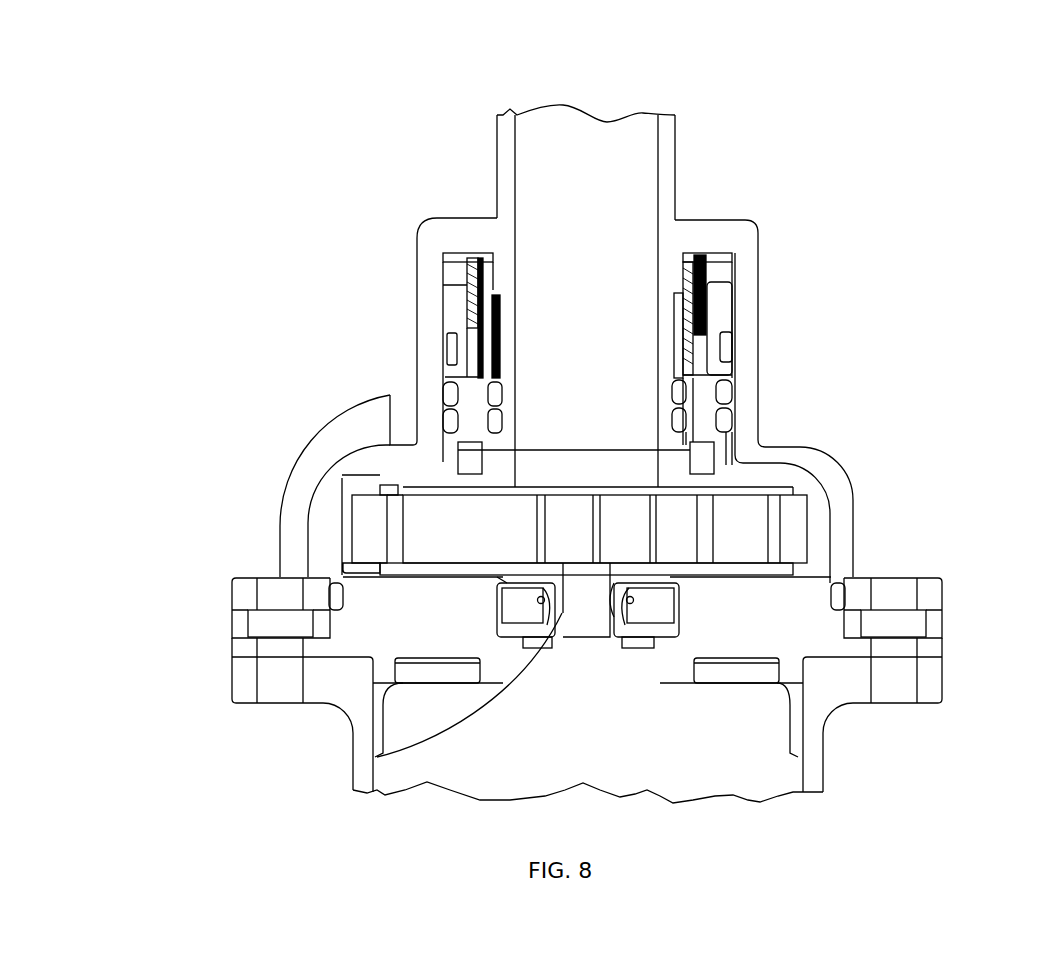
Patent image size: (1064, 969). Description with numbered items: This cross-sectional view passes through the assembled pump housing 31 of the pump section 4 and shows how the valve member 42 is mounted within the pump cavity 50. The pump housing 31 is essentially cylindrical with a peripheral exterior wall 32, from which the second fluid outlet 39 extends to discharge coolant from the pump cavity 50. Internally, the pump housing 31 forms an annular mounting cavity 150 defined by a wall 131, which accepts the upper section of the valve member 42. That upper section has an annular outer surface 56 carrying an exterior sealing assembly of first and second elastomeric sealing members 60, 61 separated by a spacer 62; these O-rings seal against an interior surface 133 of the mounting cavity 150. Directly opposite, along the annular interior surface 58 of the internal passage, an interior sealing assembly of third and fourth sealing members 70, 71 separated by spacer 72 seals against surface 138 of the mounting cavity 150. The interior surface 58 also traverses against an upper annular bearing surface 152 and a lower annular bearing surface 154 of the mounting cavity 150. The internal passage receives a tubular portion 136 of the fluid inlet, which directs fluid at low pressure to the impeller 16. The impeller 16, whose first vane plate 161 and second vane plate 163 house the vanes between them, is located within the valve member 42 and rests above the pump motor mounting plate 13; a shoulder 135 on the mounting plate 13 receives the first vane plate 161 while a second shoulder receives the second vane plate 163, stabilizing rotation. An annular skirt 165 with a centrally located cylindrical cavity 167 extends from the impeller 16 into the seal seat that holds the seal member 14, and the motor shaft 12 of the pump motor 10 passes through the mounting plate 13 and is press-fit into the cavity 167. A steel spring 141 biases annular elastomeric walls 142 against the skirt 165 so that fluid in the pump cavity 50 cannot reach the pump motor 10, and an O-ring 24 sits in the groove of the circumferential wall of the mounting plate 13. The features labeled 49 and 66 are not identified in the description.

The pump section 4 is at (753, 50).
The pump motor 10 is at (703, 762).
The motor shaft 12 is at (530, 613).
The pump motor mounting plate 13 is at (375, 608).
The seal member 14 is at (377, 758).
The impeller 16 is at (445, 530).
The O-ring 24 is at (333, 602).
The pump housing 31 is at (716, 212).
The peripheral exterior wall 32 is at (417, 263).
The second fluid outlet 39 is at (382, 494).
The valve member 42 is at (812, 517).
The outer wall 49 is at (832, 532).
The pump cavity 50 is at (735, 568).
The annular outer surface 56 is at (733, 440).
The annular interior surface 58 is at (625, 350).
The first elastomeric sealing member 60 is at (722, 393).
The second elastomeric sealing member 61 is at (724, 422).
The spacer 62 is at (452, 398).
The spacer 66 is at (707, 360).
The third sealing member 70 is at (680, 385).
The fourth sealing member 71 is at (670, 428).
The spacer 72 is at (478, 373).
The wall 131 is at (747, 330).
The interior surface 133 is at (730, 347).
The shoulder 135 is at (340, 584).
The tubular portion 136 is at (563, 177).
The surface 138 is at (500, 403).
The steel spring 141 is at (633, 602).
The annular elastomeric walls 142 is at (379, 487).
The annular mounting cavity 150 is at (450, 270).
The upper annular bearing surface 152 is at (490, 275).
The lower annular bearing surface 154 is at (668, 437).
The first vane plate 161 is at (448, 568).
The second vane plate 163 is at (750, 488).
The annular skirt 165 is at (498, 578).
The cylindrical cavity 167 is at (608, 593).